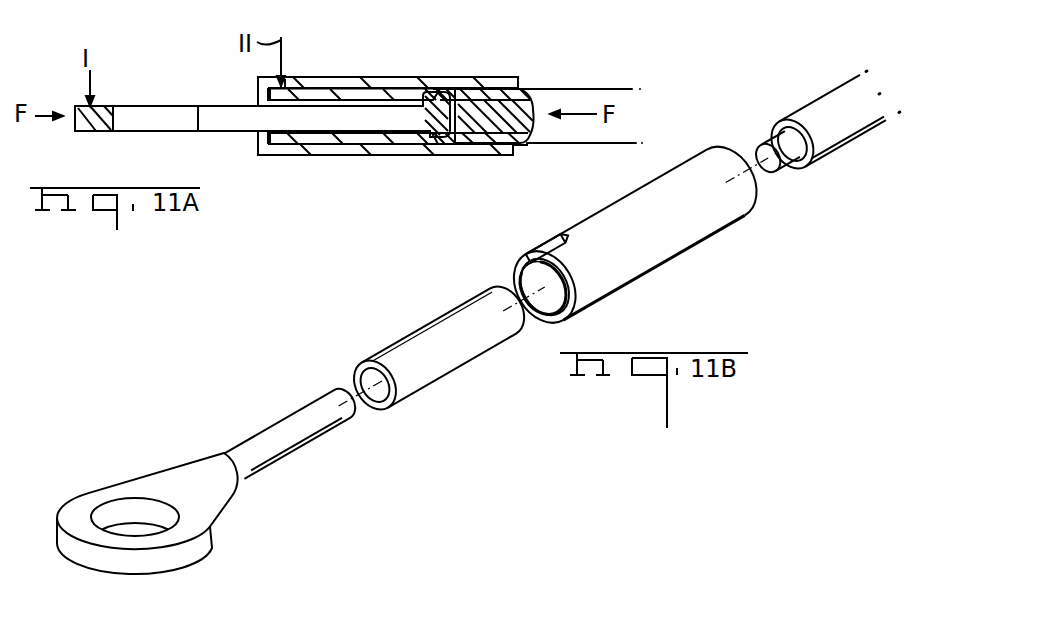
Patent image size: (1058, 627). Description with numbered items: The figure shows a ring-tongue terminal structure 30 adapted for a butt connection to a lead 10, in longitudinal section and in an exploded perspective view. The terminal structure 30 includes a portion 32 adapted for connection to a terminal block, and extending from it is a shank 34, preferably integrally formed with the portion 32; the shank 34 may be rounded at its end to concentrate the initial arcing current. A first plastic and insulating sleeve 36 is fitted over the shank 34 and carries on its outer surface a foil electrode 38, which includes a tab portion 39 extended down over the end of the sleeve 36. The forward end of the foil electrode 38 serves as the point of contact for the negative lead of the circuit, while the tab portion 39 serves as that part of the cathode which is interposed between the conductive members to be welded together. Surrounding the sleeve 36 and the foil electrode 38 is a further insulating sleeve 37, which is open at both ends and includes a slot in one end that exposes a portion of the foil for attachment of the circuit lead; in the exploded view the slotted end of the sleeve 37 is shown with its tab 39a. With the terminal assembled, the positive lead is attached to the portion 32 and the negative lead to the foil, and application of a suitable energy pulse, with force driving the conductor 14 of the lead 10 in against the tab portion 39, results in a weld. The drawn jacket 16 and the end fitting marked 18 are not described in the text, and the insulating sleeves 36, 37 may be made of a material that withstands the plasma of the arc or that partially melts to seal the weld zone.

In FIG. 11A, the lead 10 is at (556, 118).
In FIG. 11B, the lead 10 is at (808, 110).
In FIG. 11A, the conductor 14 is at (483, 125).
In FIG. 11B, the conductor 14 is at (770, 138).
In FIG. 11A, the cable jacket 16 is at (504, 96).
In FIG. 11B, the cable jacket 16 is at (830, 140).
In FIG. 11B, the end fitting 18 is at (212, 566).
In FIG. 11A, the ring-tongue terminal structure 30 is at (370, 103).
In FIG. 11B, the ring-tongue terminal structure 30 is at (496, 276).
In FIG. 11A, the portion 32 is at (90, 130).
In FIG. 11B, the portion 32 is at (107, 495).
In FIG. 11A, the shank 34 is at (412, 110).
In FIG. 11B, the shank 34 is at (288, 450).
In FIG. 11A, the first plastic and insulating sleeve 36 is at (328, 145).
In FIG. 11B, the first plastic and insulating sleeve 36 is at (448, 356).
In FIG. 11A, the further insulating sleeve 37 is at (325, 78).
In FIG. 11B, the further insulating sleeve 37 is at (657, 252).
In FIG. 11A, the foil electrode 38 is at (358, 90).
In FIG. 11B, the foil electrode 38 is at (405, 340).
In FIG. 11A, the tab portion 39 is at (460, 100).
In FIG. 11B, the tab portion 39 is at (510, 277).
In FIG. 11A, the ring tab 39a is at (288, 86).
In FIG. 11B, the ring tab 39a is at (552, 245).